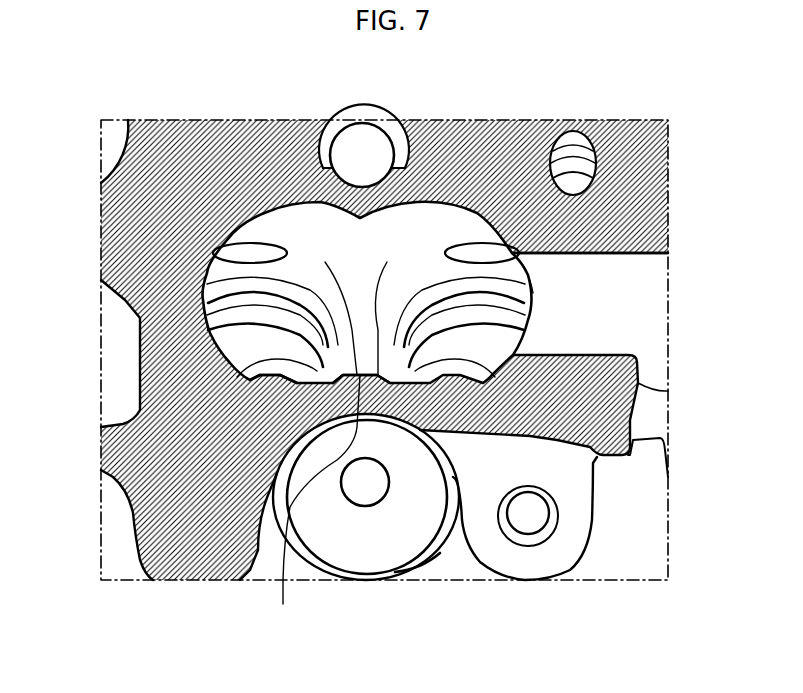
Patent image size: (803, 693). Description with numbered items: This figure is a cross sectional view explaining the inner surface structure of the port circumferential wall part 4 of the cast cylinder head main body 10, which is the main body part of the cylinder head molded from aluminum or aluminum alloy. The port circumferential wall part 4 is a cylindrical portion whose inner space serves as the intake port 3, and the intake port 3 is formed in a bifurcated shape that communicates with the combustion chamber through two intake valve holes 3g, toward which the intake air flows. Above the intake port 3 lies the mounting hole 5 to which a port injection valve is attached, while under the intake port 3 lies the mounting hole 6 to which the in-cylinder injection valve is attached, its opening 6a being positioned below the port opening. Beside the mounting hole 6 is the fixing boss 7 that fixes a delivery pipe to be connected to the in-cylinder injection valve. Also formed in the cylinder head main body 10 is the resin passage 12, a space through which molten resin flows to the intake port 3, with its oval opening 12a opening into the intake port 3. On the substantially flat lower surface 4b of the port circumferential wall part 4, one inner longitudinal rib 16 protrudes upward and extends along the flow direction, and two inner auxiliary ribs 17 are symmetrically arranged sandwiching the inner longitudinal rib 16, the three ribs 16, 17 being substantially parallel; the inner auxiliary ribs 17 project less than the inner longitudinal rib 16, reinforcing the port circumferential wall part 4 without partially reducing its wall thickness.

The cylinder head main body 10 is at (589, 112).
The port circumferential wall part 4 is at (117, 245).
The intake port 3 is at (377, 260).
The mounting hole 5 is at (373, 167).
The intake valve hole 3g is at (243, 337).
The resin passage 12 is at (642, 316).
The opening of the resin passage 12a is at (533, 293).
The lower surface of the port circumferential wall part 4b is at (247, 378).
The inner auxiliary rib 17 is at (268, 379).
The mounting hole 6 is at (397, 528).
The opening of the mounting hole 6a is at (422, 552).
The fixing boss 7 is at (563, 550).
The inner longitudinal rib 16 is at (283, 604).